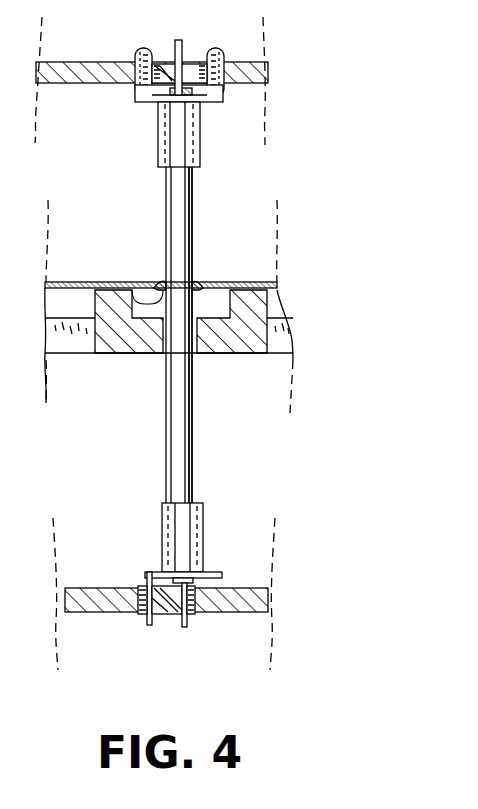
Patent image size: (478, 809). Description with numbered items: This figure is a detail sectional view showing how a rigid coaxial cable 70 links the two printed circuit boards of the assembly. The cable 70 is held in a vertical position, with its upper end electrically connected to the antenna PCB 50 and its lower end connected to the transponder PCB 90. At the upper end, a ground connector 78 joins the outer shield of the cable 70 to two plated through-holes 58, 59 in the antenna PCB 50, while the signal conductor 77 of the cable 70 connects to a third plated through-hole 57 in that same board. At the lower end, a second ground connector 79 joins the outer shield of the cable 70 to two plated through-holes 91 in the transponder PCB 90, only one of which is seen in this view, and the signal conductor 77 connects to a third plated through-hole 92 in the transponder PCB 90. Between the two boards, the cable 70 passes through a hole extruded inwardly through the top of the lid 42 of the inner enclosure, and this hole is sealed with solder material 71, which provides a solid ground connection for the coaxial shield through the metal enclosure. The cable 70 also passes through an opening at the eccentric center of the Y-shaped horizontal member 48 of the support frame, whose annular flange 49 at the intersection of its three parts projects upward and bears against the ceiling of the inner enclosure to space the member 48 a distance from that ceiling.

The lid 42 is at (227, 283).
The Y-shaped horizontal member 48 is at (138, 355).
The annular flange 49 is at (94, 295).
The antenna PCB 50 is at (93, 85).
The third plated through-hole 57 is at (170, 62).
The plated through-hole 58 is at (230, 62).
The plated through-hole 59 is at (130, 62).
The coaxial cable 70 is at (196, 435).
The solder material 71 is at (200, 285).
The signal conductor 77 is at (182, 46).
The ground connector 78 is at (200, 136).
The second ground connector 79 is at (203, 540).
The transponder PCB 90 is at (102, 588).
The plated through-holes 91 is at (158, 618).
The third plated through-hole 92 is at (180, 623).